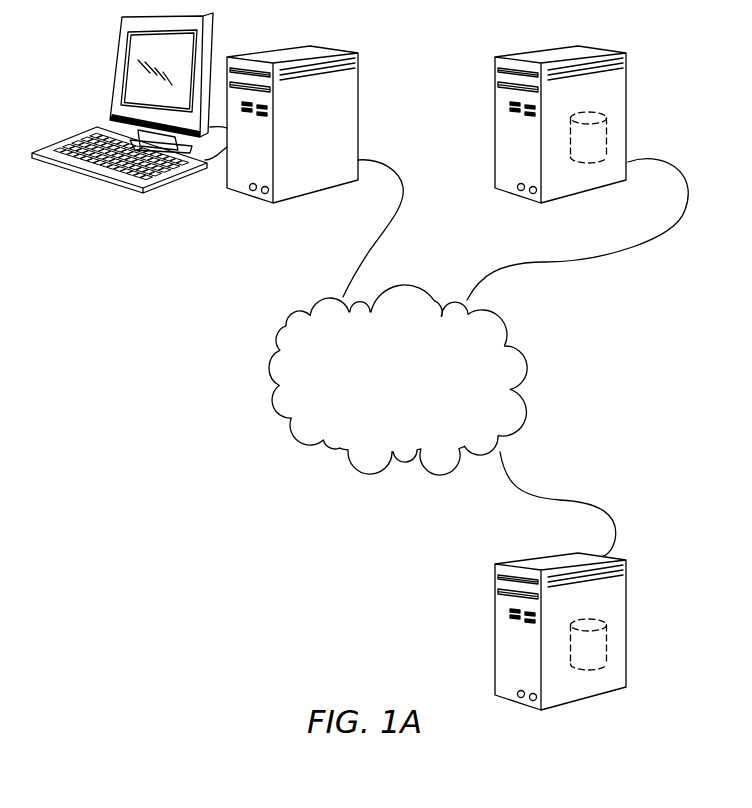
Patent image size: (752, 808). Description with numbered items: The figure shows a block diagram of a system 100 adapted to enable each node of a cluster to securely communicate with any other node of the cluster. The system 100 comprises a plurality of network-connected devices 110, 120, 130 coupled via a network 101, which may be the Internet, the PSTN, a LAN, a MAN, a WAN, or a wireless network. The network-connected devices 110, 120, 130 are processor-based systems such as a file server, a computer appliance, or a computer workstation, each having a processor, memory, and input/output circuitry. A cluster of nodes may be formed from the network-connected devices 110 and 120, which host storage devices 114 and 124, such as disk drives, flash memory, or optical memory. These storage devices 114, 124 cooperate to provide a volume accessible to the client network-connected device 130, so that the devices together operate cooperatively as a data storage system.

The system 100 is at (238, 489).
The network 101 is at (415, 390).
The network-connected device 110 is at (628, 610).
The storage device 114 is at (598, 653).
The network-connected device 120 is at (628, 97).
The storage device 124 is at (598, 137).
The network-connected device 130 is at (358, 102).